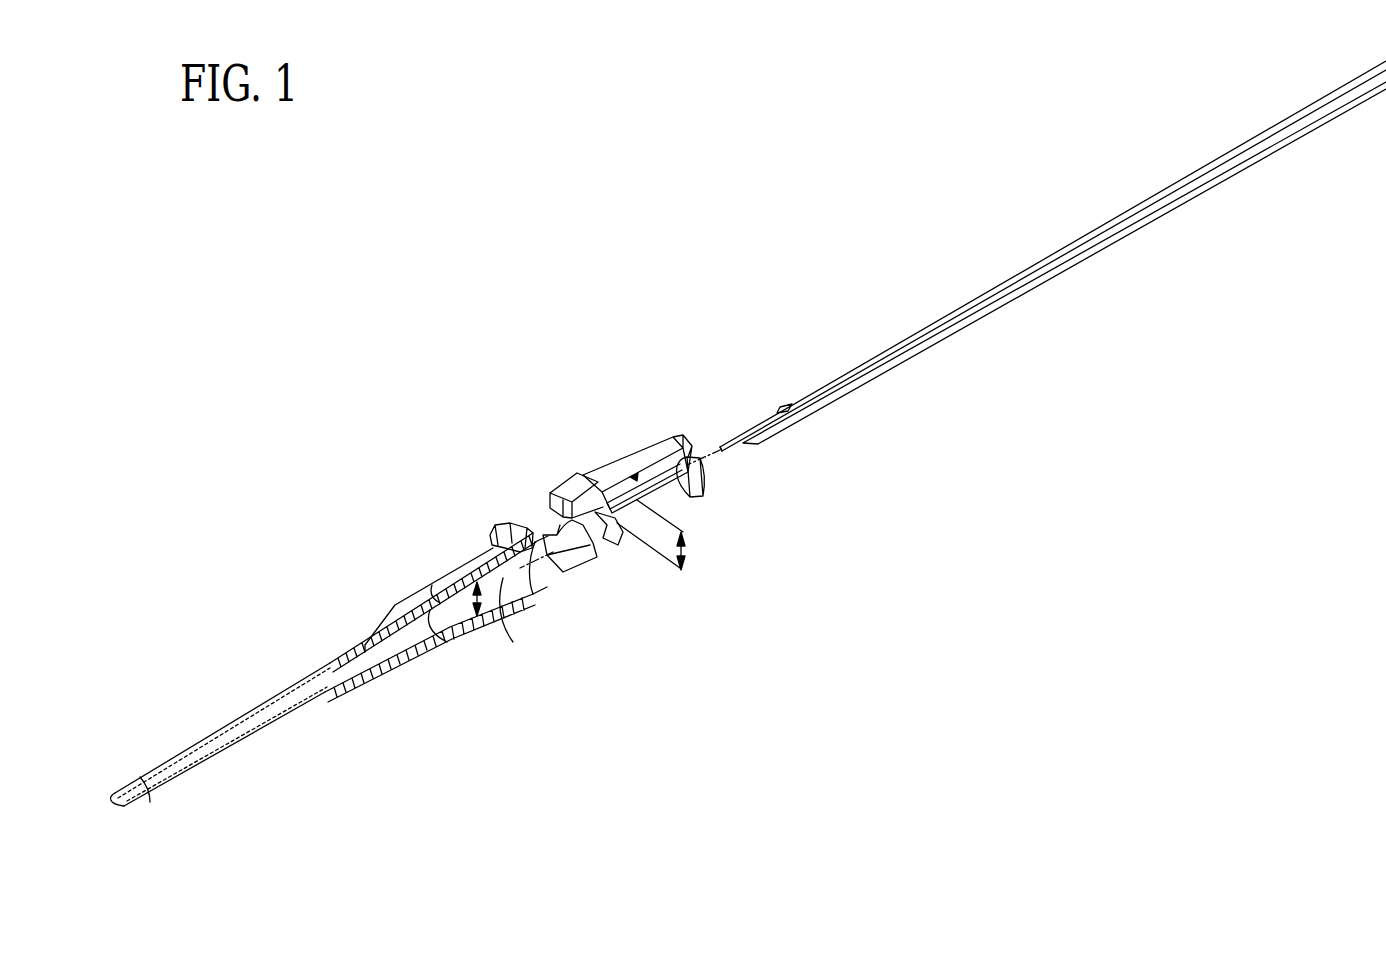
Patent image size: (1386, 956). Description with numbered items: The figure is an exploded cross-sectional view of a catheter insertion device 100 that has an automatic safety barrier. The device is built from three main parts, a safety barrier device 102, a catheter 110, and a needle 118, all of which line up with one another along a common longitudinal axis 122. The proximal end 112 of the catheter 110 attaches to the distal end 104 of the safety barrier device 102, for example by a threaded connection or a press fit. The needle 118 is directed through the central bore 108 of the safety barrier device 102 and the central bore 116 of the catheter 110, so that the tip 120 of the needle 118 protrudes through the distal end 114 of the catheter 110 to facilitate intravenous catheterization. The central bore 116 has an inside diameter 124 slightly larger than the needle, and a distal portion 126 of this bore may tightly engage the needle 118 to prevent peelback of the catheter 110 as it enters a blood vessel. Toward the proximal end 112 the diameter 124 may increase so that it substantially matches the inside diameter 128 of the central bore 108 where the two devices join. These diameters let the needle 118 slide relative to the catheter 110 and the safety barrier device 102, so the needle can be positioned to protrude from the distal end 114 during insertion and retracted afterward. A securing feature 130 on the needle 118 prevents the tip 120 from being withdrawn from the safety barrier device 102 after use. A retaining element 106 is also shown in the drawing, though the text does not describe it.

The catheter insertion device 100 is at (1058, 576).
The safety barrier device 102 is at (630, 440).
The distal end of the safety barrier device 104 is at (548, 530).
The retaining clip 106 is at (718, 478).
The central bore of the safety barrier device 108 is at (667, 495).
The catheter 110 is at (348, 626).
The proximal end of the catheter 112 is at (520, 531).
The distal end of the catheter 114 is at (127, 800).
The central bore of the catheter 116 is at (503, 580).
The needle 118 is at (1222, 157).
The tip of the needle 120 is at (722, 445).
The longitudinal axis 122 is at (722, 458).
The inside diameter of the catheter central bore 124 is at (480, 602).
The distal portion of the central bore 126 is at (233, 727).
The inside diameter of the safety barrier device central bore 128 is at (683, 550).
The securing feature 130 is at (778, 411).